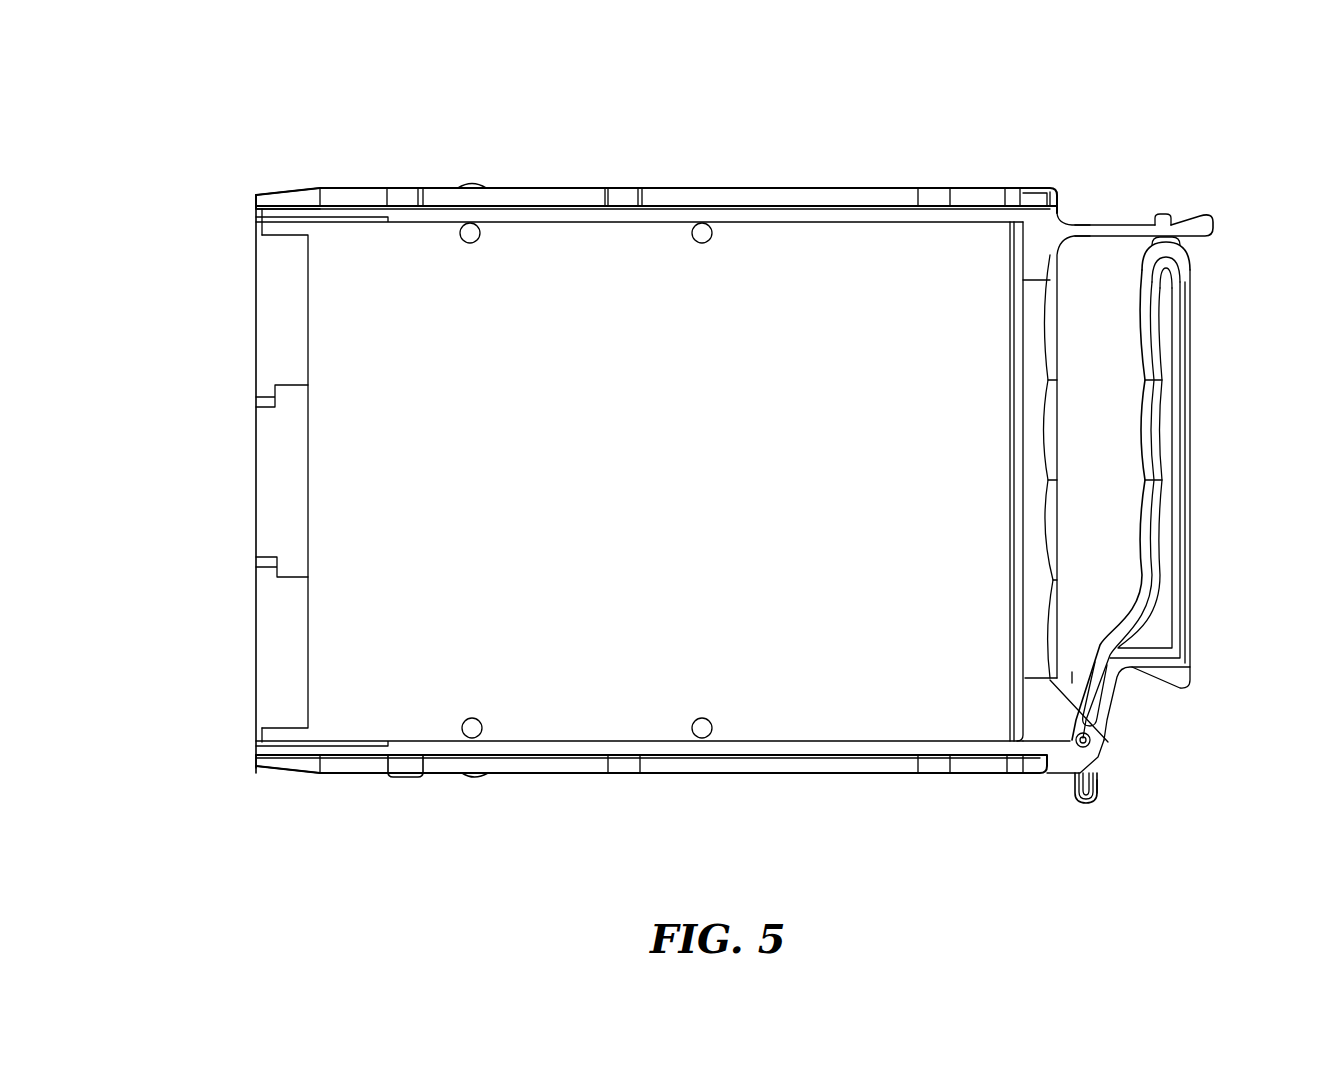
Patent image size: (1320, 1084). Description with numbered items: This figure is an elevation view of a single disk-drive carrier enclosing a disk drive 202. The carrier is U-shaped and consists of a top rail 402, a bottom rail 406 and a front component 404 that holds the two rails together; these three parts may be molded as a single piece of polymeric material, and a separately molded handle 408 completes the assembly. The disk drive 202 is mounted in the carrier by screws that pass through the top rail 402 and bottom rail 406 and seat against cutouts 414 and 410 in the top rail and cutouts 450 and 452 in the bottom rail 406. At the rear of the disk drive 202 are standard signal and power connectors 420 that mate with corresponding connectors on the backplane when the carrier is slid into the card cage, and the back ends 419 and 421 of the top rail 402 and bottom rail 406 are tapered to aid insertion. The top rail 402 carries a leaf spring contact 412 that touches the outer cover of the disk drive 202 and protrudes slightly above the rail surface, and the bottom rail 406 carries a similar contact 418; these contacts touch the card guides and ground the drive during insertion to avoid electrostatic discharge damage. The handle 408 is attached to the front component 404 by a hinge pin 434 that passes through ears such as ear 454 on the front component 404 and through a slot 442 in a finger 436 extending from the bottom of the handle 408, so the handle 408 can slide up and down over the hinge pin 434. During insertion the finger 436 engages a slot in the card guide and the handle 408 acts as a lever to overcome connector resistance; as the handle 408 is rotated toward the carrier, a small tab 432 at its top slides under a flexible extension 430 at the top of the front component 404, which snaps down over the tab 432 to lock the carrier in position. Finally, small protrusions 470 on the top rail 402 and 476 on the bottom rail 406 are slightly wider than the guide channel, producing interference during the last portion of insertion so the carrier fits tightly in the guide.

The disk drive 202 is at (375, 648).
The top rail 402 is at (553, 198).
The front component 404 is at (1036, 428).
The bottom rail 406 is at (475, 768).
The handle 408 is at (1185, 432).
The cutout 410 is at (948, 196).
The leaf spring contact 412 is at (472, 184).
The cutout 414 is at (417, 197).
The contact 418 is at (470, 779).
The back end 419 is at (287, 188).
The signal and power connectors 420 is at (270, 438).
The rail tapered end 421 is at (300, 765).
The flexible extension 430 is at (1128, 173).
The tab 432 is at (1160, 213).
The hinge pin 434 is at (1094, 746).
The finger 436 is at (1072, 806).
The slot 442 is at (1102, 800).
The cutout 450 is at (412, 779).
The cutout 452 is at (920, 767).
The ear 454 is at (1055, 718).
The protrusion 470 is at (1013, 196).
The protrusion 476 is at (1013, 765).